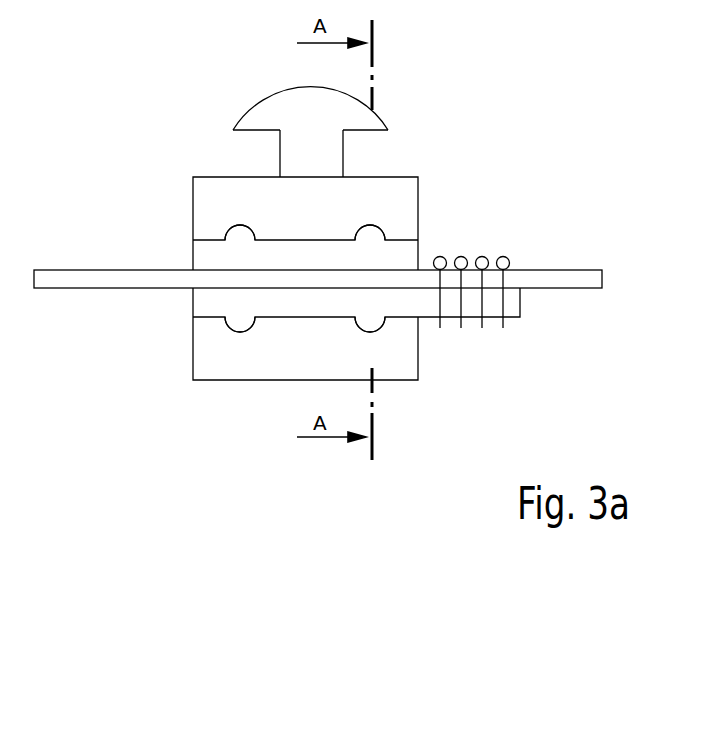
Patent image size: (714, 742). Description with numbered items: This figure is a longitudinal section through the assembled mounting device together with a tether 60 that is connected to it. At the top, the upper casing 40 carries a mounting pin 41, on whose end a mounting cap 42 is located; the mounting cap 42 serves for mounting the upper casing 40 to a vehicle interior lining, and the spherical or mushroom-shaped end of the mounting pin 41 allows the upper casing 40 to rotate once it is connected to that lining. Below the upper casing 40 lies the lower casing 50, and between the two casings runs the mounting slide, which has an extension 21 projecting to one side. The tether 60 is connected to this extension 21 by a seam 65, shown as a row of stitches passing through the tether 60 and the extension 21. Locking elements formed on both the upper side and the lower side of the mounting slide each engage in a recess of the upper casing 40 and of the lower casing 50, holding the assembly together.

The extension 21 is at (512, 302).
The upper casing 40 is at (208, 190).
The mounting pin 41 is at (297, 155).
The mounting cap 42 is at (260, 113).
The lower casing 50 is at (232, 370).
The tether 60 is at (567, 268).
The seam 65 is at (437, 256).